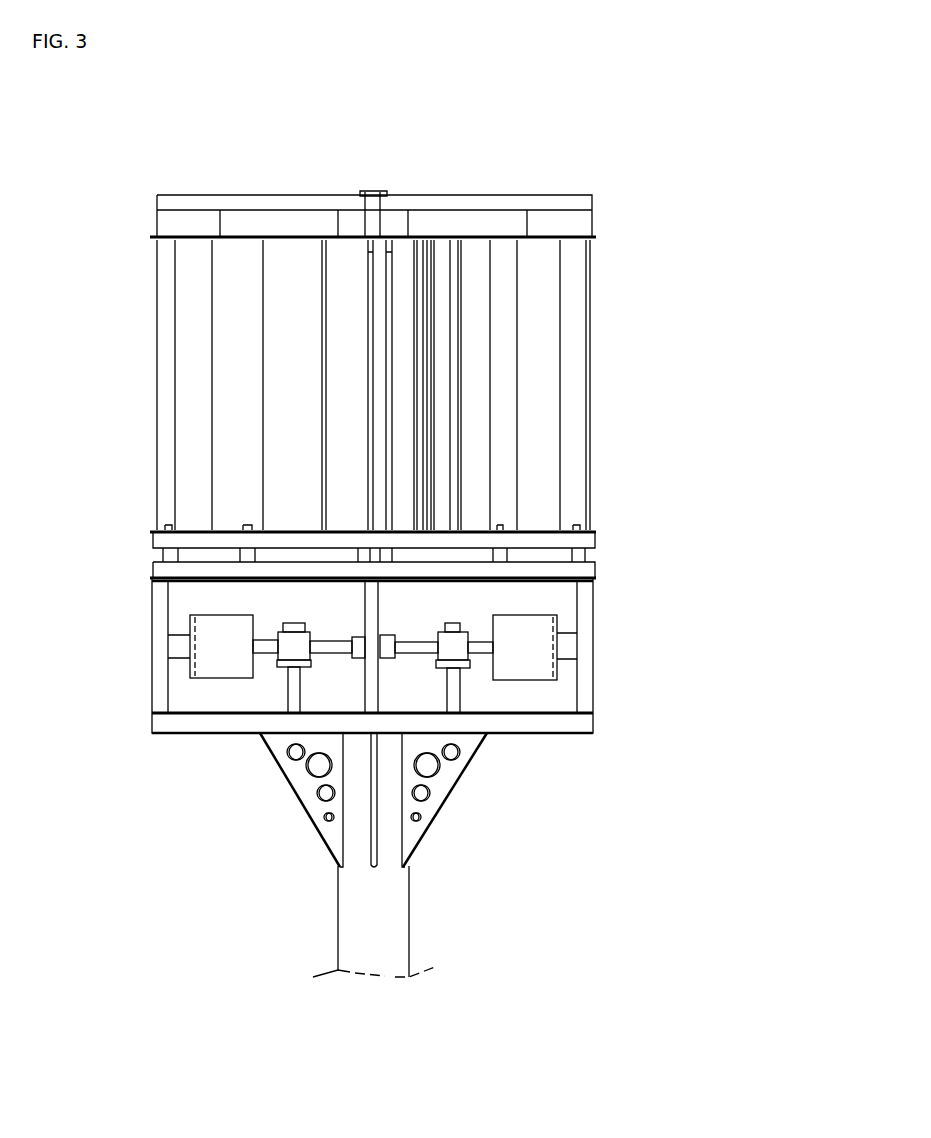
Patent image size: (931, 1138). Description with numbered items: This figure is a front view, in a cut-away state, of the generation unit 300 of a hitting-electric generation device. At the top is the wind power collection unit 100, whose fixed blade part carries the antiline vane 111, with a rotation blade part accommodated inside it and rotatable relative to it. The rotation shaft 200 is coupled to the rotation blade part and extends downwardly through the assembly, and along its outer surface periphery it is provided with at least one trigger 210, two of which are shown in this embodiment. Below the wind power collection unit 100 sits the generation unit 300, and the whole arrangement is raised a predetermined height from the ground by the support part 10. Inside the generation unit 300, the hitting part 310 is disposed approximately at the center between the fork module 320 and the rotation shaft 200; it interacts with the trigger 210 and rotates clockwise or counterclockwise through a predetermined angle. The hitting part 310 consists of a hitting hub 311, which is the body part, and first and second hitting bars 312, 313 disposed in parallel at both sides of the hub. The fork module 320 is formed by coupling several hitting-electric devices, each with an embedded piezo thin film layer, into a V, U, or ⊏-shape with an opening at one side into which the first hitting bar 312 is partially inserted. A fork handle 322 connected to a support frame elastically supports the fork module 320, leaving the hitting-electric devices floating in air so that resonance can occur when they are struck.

The support part 10 is at (352, 918).
The wind power collection unit 100 is at (595, 345).
The antiline vane 111 is at (190, 374).
The rotation shaft 200 is at (347, 220).
The trigger 210 is at (352, 658).
The generation unit 300 is at (150, 620).
The hitting part 310 is at (605, 818).
The hitting hub 311 is at (453, 655).
The first hitting bar 312 is at (412, 653).
The second hitting bar 313 is at (478, 648).
The fork module 320 is at (560, 678).
The fork handle 322 is at (563, 645).